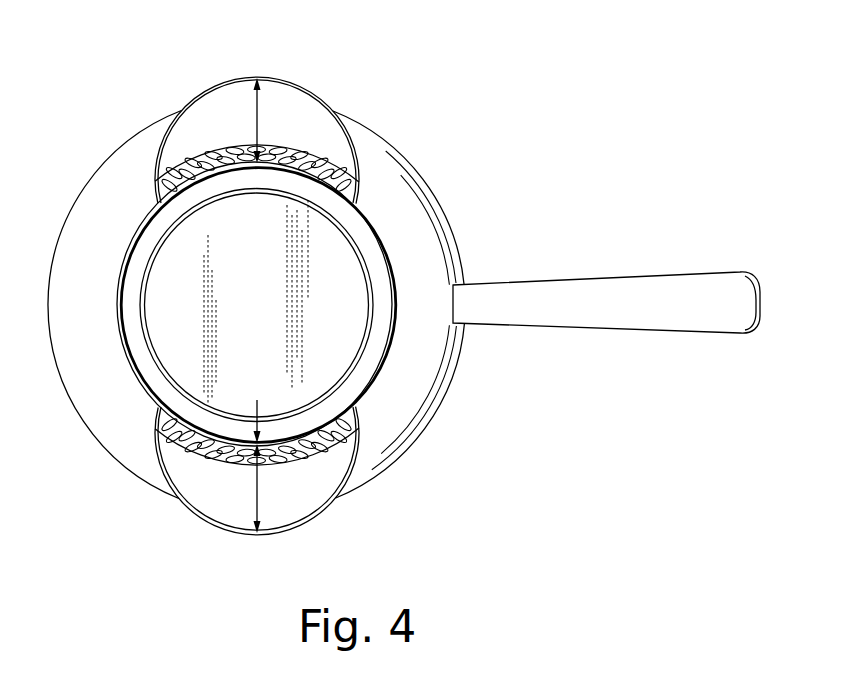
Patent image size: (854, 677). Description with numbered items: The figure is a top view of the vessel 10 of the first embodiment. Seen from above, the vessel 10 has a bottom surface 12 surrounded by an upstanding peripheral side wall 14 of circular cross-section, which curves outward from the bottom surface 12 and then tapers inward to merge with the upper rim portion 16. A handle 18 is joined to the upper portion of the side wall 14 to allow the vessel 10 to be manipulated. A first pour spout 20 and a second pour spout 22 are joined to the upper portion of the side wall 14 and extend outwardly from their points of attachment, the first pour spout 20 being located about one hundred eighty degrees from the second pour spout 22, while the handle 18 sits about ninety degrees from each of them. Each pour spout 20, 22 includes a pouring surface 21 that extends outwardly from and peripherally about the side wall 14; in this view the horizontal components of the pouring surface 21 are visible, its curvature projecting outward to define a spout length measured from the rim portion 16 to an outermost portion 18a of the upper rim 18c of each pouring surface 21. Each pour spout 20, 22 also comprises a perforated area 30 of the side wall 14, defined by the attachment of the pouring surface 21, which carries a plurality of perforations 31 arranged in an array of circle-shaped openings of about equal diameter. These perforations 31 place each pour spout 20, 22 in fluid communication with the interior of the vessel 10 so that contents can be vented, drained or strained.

The vessel 10 is at (202, 63).
The bottom surface 12 is at (271, 323).
The side wall 14 is at (410, 452).
The rim portion 16 is at (128, 255).
The handle 18 is at (657, 273).
The outermost portion 18a is at (257, 70).
The upper rim 18c is at (203, 90).
The first pour spout 20 is at (313, 520).
The pouring surface 21 is at (320, 142).
The second pour spout 22 is at (300, 88).
The perforated area 30 is at (234, 308).
The perforations 31 is at (207, 157).